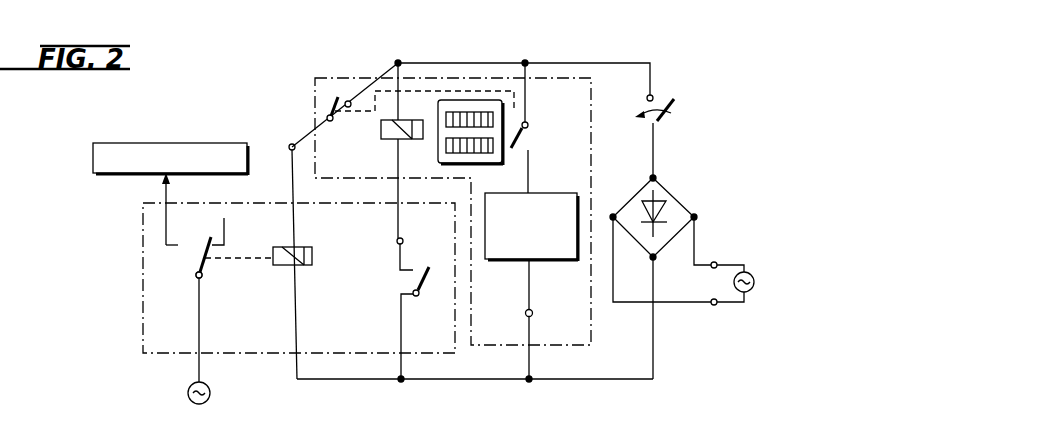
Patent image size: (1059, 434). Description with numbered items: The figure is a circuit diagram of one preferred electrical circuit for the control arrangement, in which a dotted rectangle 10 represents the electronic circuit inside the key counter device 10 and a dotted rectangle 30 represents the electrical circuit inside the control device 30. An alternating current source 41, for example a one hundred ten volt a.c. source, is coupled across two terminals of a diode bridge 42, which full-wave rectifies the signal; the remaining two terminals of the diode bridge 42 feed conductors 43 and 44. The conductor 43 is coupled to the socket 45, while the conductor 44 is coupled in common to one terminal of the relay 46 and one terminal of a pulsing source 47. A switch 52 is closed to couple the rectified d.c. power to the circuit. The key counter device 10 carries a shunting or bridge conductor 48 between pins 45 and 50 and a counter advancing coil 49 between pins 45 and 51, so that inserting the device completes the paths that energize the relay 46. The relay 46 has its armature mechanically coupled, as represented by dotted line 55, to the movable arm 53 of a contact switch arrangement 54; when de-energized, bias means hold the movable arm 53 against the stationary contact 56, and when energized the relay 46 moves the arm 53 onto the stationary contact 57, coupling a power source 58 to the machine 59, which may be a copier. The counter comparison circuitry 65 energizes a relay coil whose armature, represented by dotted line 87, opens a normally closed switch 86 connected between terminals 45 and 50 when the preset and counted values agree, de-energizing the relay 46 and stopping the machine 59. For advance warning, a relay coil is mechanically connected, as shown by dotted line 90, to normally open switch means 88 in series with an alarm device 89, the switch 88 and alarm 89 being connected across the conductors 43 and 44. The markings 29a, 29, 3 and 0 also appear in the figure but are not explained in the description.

The machine 59 is at (173, 143).
The output conductor 29a is at (163, 188).
The control device 30 is at (135, 280).
The key counter device 10 is at (598, 112).
The stationary contact 57 is at (170, 262).
The movable arm 53 is at (183, 276).
The contact switch arrangement 54 is at (209, 266).
The stationary contact 56 is at (226, 226).
The dotted line 55 is at (265, 258).
The relay 46 is at (311, 266).
The power conductor 29 is at (195, 368).
The power source 58 is at (193, 404).
The pin 51 is at (397, 242).
The pulsing source 47 is at (419, 299).
The terminal 3 is at (527, 288).
The alarm device 89 is at (562, 262).
The conductor 44 is at (455, 380).
The diode bridge 42 is at (672, 193).
The alternating current source 41 is at (754, 280).
The switch 52 is at (657, 102).
The conductor 43 is at (525, 60).
The dotted line 90 is at (527, 120).
The normally open switch means 88 is at (519, 138).
The circuitry 65 is at (465, 99).
The dotted line 87 is at (417, 90).
The socket 45 is at (399, 60).
The normally closed switch 86 is at (340, 97).
The shunting conductor 48 is at (304, 128).
The pin 50 is at (291, 143).
The counter advancing coil 49 is at (383, 140).
The contact label 0 is at (310, 166).